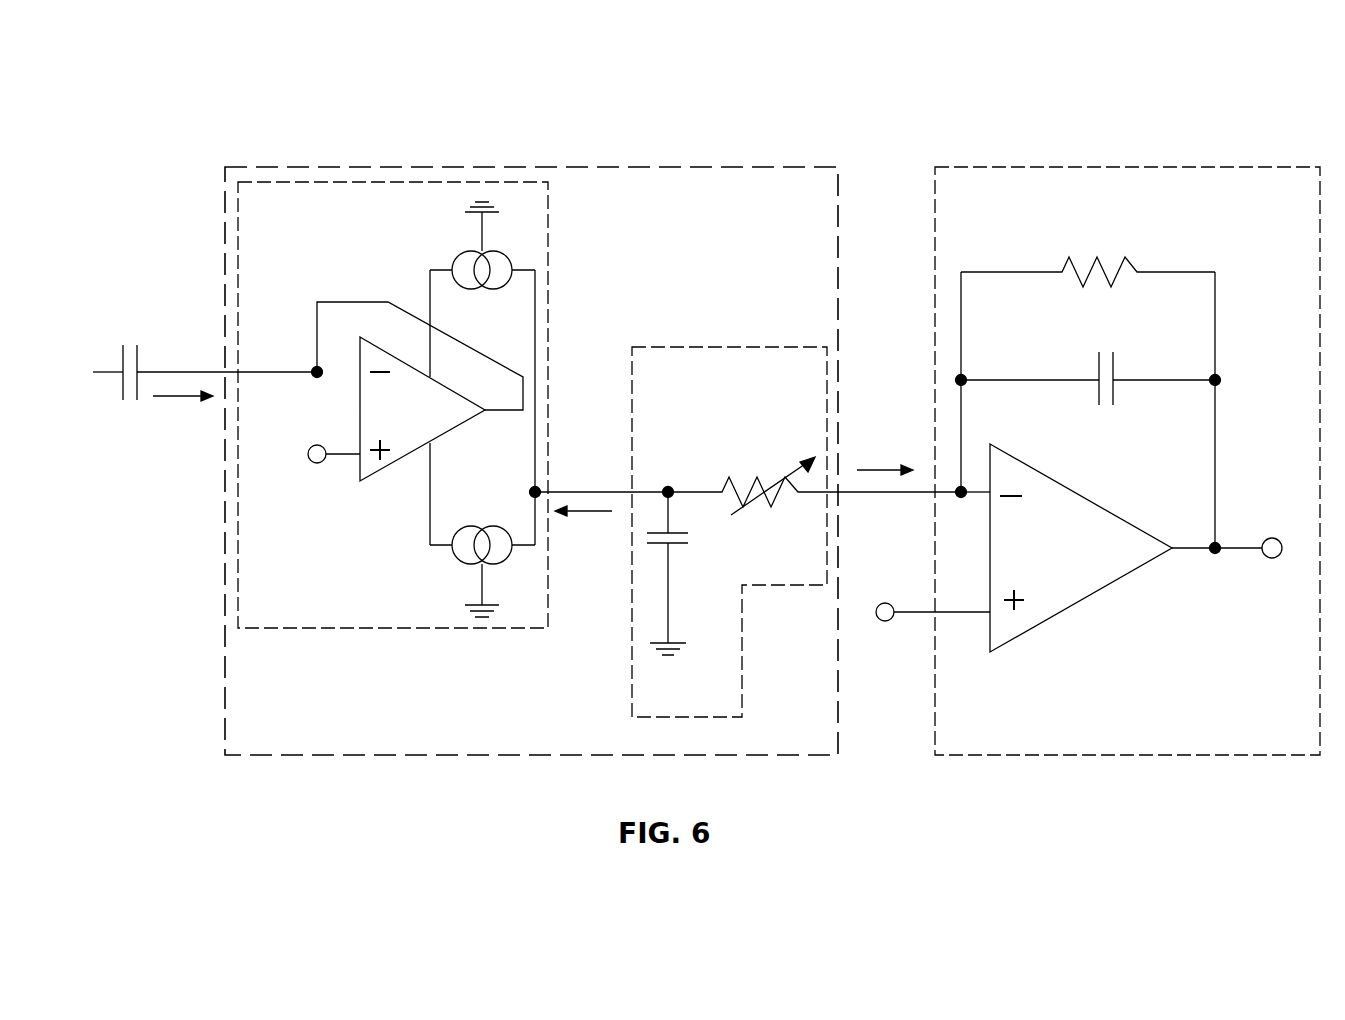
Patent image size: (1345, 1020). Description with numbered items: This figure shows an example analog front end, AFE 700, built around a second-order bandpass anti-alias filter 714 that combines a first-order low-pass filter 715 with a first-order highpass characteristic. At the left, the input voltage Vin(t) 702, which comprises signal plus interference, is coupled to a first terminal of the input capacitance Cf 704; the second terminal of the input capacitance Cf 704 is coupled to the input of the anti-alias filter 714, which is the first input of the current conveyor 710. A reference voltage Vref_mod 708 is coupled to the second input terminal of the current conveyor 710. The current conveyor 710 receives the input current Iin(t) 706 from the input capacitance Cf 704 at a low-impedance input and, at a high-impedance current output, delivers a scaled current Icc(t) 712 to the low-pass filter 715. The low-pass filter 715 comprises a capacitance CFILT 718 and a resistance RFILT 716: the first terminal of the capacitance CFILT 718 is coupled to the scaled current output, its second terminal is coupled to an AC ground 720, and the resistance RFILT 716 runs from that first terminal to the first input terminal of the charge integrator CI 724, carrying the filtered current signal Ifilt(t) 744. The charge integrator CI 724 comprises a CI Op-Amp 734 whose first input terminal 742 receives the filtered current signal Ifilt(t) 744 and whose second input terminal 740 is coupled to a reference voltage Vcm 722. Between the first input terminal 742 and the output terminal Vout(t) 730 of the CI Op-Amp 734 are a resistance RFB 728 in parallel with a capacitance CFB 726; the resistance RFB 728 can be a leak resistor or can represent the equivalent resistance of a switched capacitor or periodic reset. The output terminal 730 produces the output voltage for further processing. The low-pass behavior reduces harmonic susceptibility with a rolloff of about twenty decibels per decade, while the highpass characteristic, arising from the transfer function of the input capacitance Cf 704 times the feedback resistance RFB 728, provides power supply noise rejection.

The AFE 700 is at (1004, 136).
The input voltage Vin(t) 702 is at (67, 368).
The input capacitance Cf 704 is at (128, 302).
The input current Iin(t) 706 is at (183, 445).
The reference voltage Vref_mod 708 is at (320, 513).
The current conveyor 710 is at (302, 247).
The scaled current Icc(t) 712 is at (586, 570).
The anti-alias filter 714 is at (666, 246).
The low-pass filter 715 is at (711, 345).
The resistance RFILT 716 is at (720, 476).
The capacitance CFILT 718 is at (730, 567).
The AC ground 720 is at (665, 657).
The reference voltage Vcm 722 is at (878, 682).
The charge integrator (CI) 724 is at (1157, 168).
The capacitance CFB 726 is at (1123, 338).
The resistance RFB 728 is at (1133, 228).
The output terminal Vout(t) 730 is at (1270, 492).
The CI Op-Amp 734 is at (1110, 512).
The second input terminal 740 is at (990, 612).
The first input terminal 742 is at (1000, 492).
The filtered current signal Ifilt(t) 744 is at (880, 418).